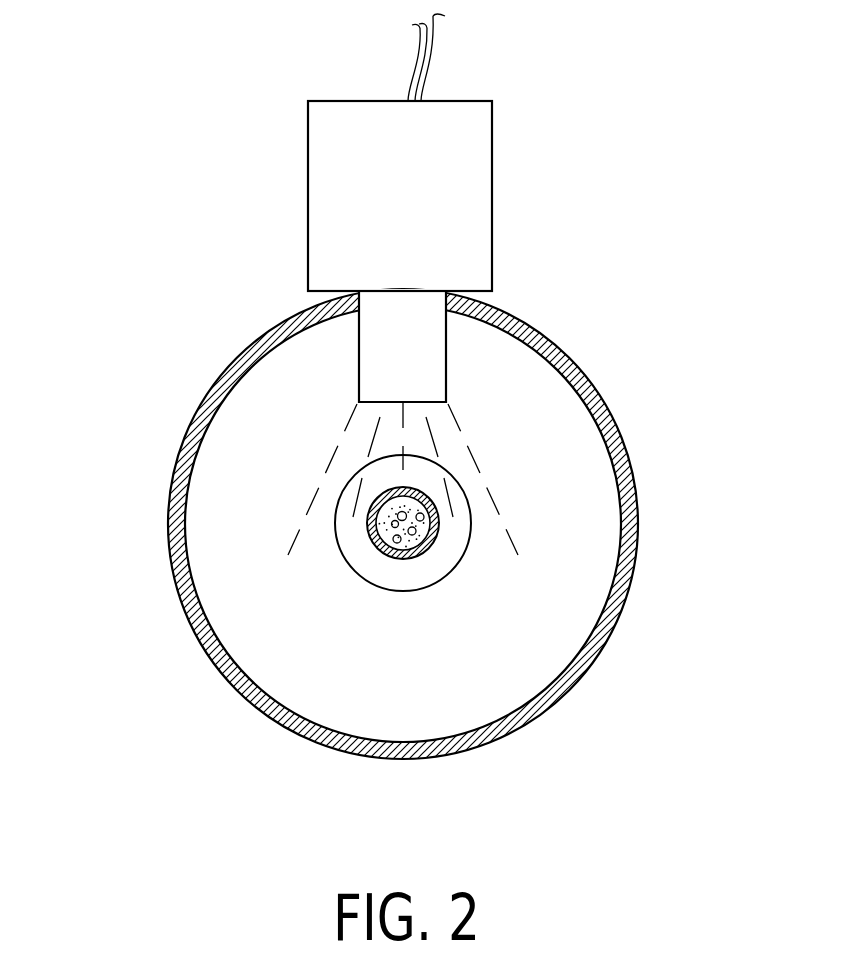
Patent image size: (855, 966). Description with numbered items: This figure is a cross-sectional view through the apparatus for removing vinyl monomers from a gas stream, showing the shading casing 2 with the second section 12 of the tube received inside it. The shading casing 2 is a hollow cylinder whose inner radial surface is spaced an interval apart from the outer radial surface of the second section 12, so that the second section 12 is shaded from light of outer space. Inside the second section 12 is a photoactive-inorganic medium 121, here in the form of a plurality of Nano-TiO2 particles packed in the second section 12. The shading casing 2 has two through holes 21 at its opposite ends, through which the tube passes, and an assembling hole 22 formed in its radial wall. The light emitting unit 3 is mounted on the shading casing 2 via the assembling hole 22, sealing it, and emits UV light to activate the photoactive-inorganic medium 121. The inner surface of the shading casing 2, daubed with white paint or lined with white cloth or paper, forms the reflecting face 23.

The shading casing 2 is at (200, 325).
The light emitting unit 3 is at (470, 108).
The second section 12 is at (368, 532).
The photoactive-inorganic medium 121 is at (378, 545).
The through hole 21 is at (455, 568).
The assembling hole 22 is at (358, 310).
The reflecting face 23 is at (578, 405).